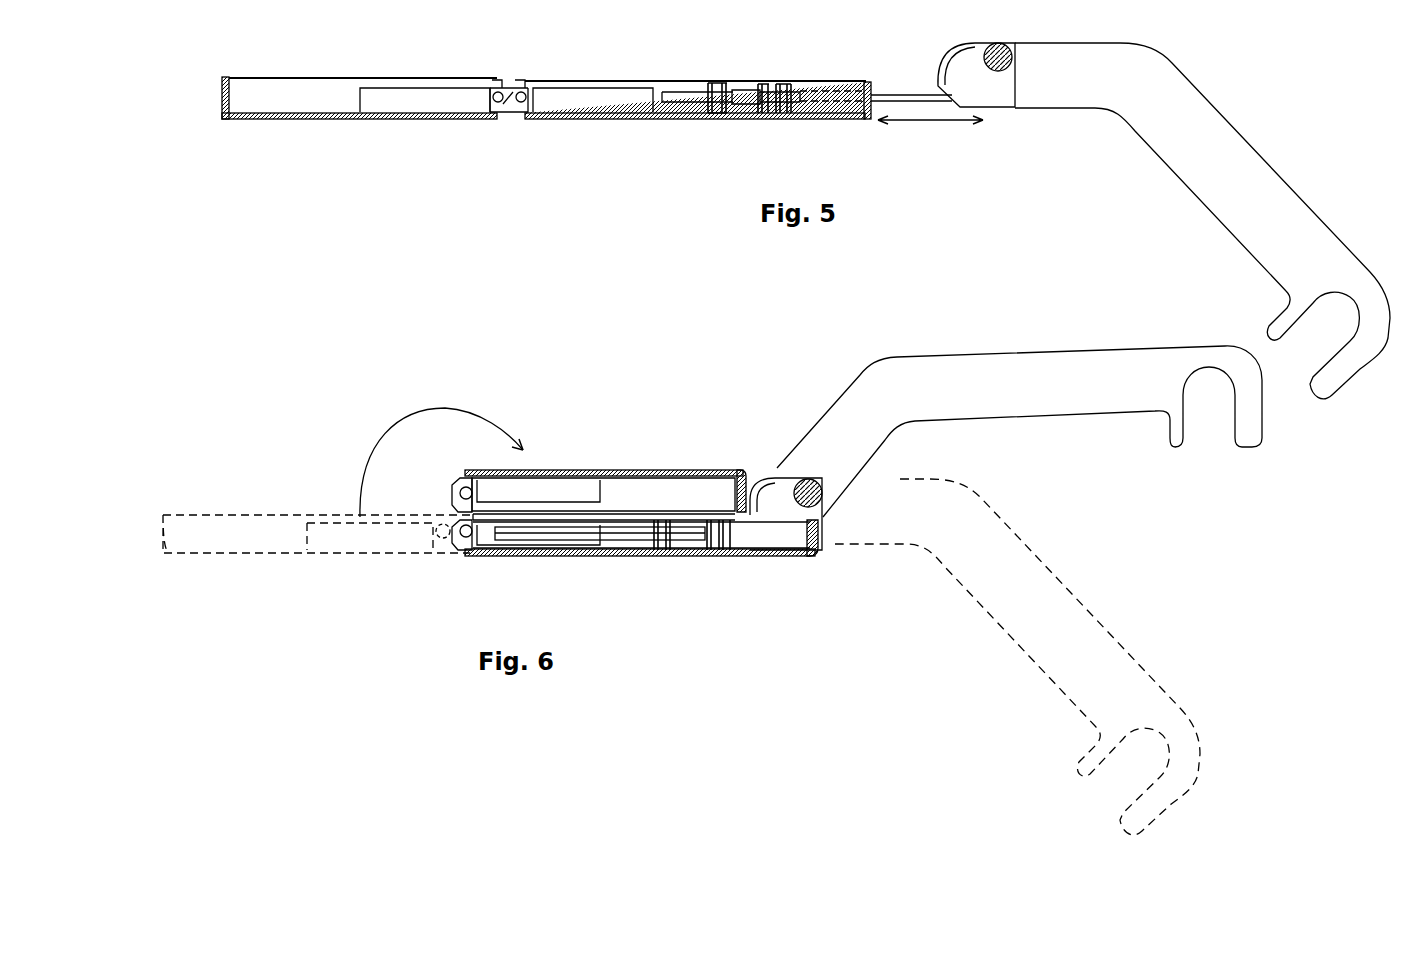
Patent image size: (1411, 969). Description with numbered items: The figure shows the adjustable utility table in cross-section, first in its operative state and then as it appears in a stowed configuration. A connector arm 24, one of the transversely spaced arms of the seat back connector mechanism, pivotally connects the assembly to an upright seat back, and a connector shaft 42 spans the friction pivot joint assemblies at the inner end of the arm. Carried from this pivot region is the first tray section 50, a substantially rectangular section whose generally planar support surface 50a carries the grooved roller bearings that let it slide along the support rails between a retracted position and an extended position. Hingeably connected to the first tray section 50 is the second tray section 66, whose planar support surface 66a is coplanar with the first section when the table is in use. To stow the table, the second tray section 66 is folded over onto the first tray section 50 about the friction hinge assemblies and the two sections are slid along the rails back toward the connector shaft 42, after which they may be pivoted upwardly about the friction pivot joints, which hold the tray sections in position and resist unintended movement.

In FIG. 5, the connector arm 24 is at (1203, 110).
In FIG. 6, the connector arm 24 is at (1065, 368).
In FIG. 5, the connector shaft 42 is at (1012, 44).
In FIG. 6, the connector shaft 42 is at (822, 497).
In FIG. 5, the first tray section 50 is at (670, 86).
In FIG. 6, the first tray section 50 is at (627, 557).
In FIG. 5, the planar support surface 50a is at (598, 82).
In FIG. 5, the second tray section 66 is at (359, 75).
In FIG. 6, the second tray section 66 is at (635, 487).
In FIG. 5, the planar support surface 66a is at (430, 58).